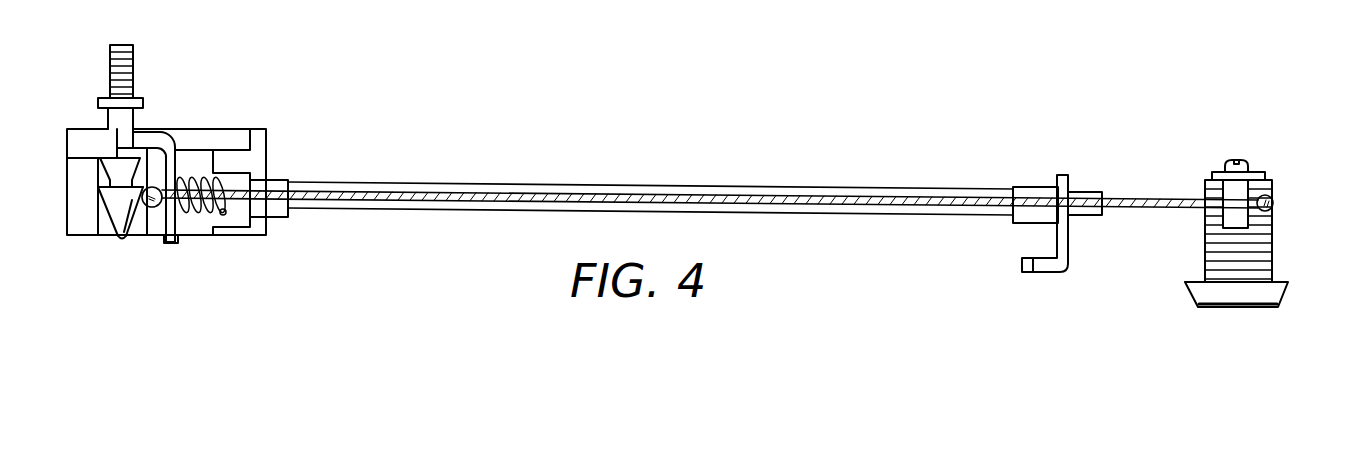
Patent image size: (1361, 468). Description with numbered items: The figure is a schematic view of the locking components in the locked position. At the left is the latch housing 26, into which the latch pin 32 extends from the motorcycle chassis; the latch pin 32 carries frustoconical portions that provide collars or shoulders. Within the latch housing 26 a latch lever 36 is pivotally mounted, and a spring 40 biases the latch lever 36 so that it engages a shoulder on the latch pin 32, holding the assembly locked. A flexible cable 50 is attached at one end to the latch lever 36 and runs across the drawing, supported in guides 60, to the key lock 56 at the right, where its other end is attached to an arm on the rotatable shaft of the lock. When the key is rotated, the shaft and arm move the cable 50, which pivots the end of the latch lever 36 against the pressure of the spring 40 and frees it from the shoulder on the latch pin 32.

The latch housing 26 is at (153, 120).
The latch pin 32 is at (141, 89).
The latch lever 36 is at (166, 147).
The spring 40 is at (237, 176).
The flexible cable 50 is at (668, 196).
The key lock 56 is at (1278, 263).
The guides 60 is at (1063, 190).